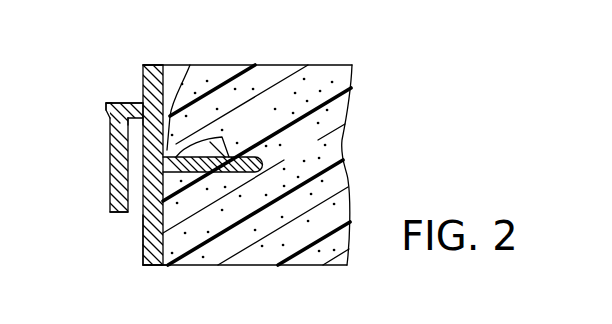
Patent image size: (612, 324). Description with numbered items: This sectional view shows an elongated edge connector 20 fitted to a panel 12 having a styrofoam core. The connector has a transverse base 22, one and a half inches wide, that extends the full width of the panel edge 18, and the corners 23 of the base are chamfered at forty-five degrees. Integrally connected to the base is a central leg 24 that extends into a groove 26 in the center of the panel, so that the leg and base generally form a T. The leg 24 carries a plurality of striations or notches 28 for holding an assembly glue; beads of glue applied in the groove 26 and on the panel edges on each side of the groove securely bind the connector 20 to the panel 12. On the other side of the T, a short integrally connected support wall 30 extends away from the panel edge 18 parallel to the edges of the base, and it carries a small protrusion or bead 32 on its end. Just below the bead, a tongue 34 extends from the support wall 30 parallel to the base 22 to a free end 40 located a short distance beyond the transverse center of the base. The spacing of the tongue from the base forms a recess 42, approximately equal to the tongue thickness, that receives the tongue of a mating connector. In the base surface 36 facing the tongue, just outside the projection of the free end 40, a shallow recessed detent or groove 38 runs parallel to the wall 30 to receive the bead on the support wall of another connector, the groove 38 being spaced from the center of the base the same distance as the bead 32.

The panel 12 is at (292, 64).
The panel edge 18 is at (152, 266).
The elongated edge connector 20 is at (84, 266).
The transverse base 22 is at (153, 63).
The corners 23 is at (152, 70).
The central leg 24 is at (190, 65).
The groove 26 is at (241, 156).
The striations or notches 28 is at (224, 139).
The support wall 30 is at (113, 102).
The bead 32 is at (108, 103).
The tongue 34 is at (110, 168).
The base surface 36 is at (145, 217).
The detent or groove 38 is at (140, 262).
The free end 40 is at (115, 215).
The recess 42 is at (140, 186).